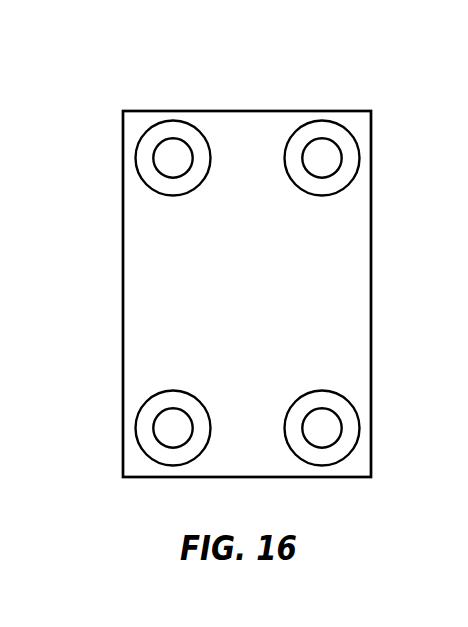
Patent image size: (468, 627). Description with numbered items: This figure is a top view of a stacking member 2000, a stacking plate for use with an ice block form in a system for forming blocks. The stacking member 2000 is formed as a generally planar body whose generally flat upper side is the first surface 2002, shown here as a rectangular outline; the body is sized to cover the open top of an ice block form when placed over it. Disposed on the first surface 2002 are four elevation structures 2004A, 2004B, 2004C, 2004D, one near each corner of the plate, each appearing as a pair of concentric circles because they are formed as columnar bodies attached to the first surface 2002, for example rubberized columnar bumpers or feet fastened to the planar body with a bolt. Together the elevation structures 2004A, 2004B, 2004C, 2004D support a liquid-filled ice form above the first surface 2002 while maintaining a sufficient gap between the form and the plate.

The stacking member 2000 is at (109, 108).
The first surface 2002 is at (162, 268).
The elevation structure 2004A is at (153, 177).
The elevation structure 2004B is at (348, 163).
The elevation structure 2004C is at (150, 422).
The elevation structure 2004D is at (348, 430).